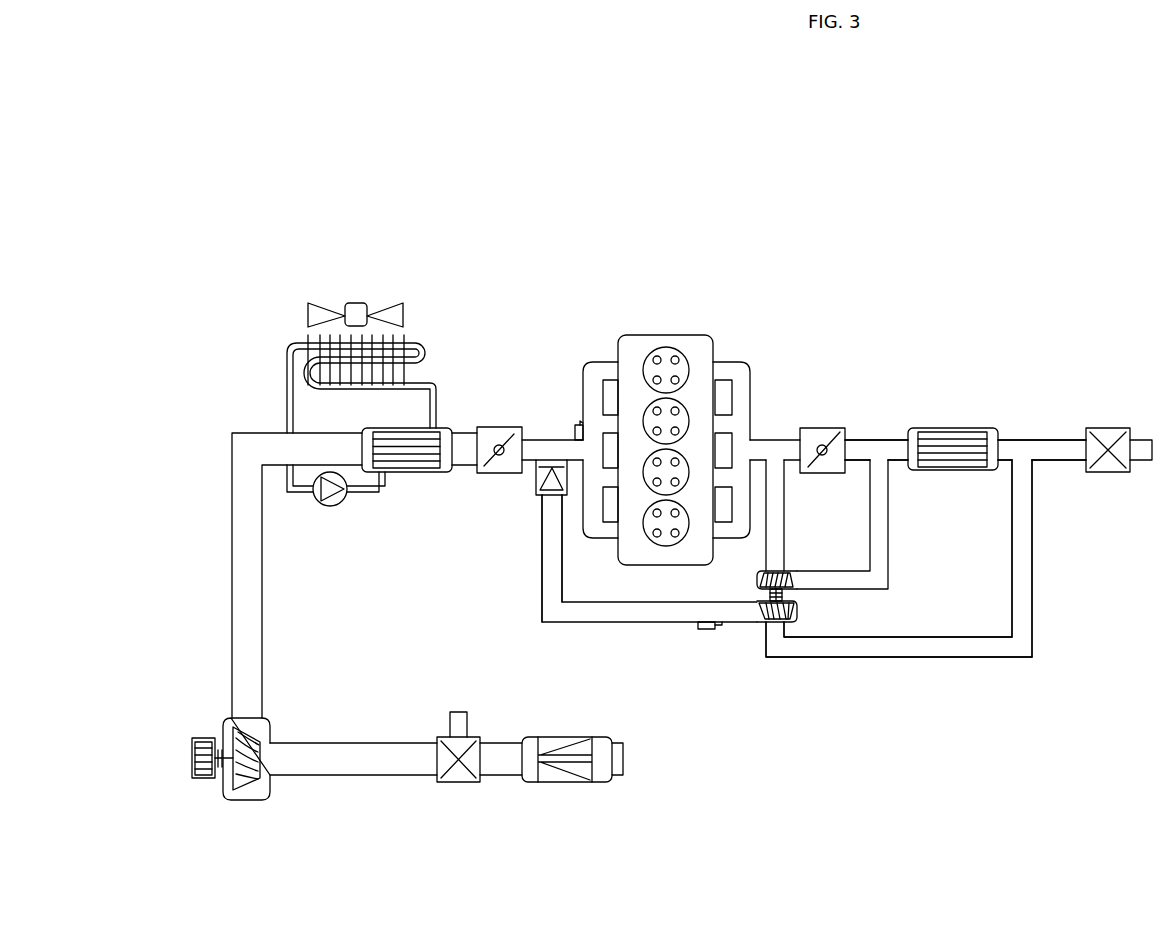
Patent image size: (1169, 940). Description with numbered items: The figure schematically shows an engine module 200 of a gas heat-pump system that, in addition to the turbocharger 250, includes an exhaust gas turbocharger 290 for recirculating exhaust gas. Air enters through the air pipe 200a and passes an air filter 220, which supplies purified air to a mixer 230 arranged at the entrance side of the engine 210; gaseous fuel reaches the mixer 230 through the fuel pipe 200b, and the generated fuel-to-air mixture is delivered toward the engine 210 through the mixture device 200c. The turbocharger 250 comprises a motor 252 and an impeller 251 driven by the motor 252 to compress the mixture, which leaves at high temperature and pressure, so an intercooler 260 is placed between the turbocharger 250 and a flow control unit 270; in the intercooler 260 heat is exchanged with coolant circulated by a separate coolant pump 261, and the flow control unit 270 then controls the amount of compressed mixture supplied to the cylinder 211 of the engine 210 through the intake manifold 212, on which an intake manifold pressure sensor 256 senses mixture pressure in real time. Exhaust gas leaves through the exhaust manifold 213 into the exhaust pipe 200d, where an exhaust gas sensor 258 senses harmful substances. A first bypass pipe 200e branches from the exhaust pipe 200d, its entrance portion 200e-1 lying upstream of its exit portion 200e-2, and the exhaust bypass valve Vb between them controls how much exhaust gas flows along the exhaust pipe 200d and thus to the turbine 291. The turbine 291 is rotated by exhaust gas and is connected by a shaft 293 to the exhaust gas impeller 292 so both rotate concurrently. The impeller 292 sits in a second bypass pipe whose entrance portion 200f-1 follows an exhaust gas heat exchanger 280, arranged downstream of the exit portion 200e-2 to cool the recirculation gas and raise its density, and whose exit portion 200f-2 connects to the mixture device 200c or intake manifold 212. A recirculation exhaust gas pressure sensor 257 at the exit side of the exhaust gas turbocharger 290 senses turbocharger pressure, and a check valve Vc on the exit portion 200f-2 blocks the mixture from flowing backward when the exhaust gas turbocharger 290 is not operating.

The engine module 200 is at (1040, 235).
The engine 210 is at (663, 419).
The cylinder 211 is at (648, 358).
The intake manifold 212 is at (585, 362).
The exhaust manifold 213 is at (742, 362).
The air filter 220 is at (567, 737).
The mixer 230 is at (460, 782).
The turbocharger 250 is at (210, 807).
The impeller 251 is at (248, 790).
The motor 252 is at (202, 782).
The intake manifold pressure sensor 256 is at (570, 423).
The recirculation exhaust gas pressure sensor 257 is at (705, 630).
The exhaust gas sensor 258 is at (1107, 428).
The intercooler 260 is at (405, 473).
The coolant pump 261 is at (328, 506).
The flow control unit 270 is at (498, 427).
The exhaust gas heat exchanger 280 is at (952, 428).
The exhaust gas turbocharger 290 is at (806, 619).
The turbine 291 is at (757, 571).
The exhaust gas impeller 292 is at (775, 622).
The shaft 293 is at (768, 596).
The air pipe 200a is at (618, 777).
The fuel pipe 200b is at (467, 723).
The mixture device 200c is at (365, 742).
The exhaust pipe 200d is at (880, 440).
The first bypass pipe 200e is at (1033, 528).
The entrance portion 200e-1 is at (778, 470).
The exit portion 200e-2 is at (880, 470).
The entrance portion 200f-1 is at (1020, 460).
The exit portion 200f-2 is at (540, 497).
The exhaust bypass valve Vb is at (820, 428).
The check valve Vc is at (535, 478).